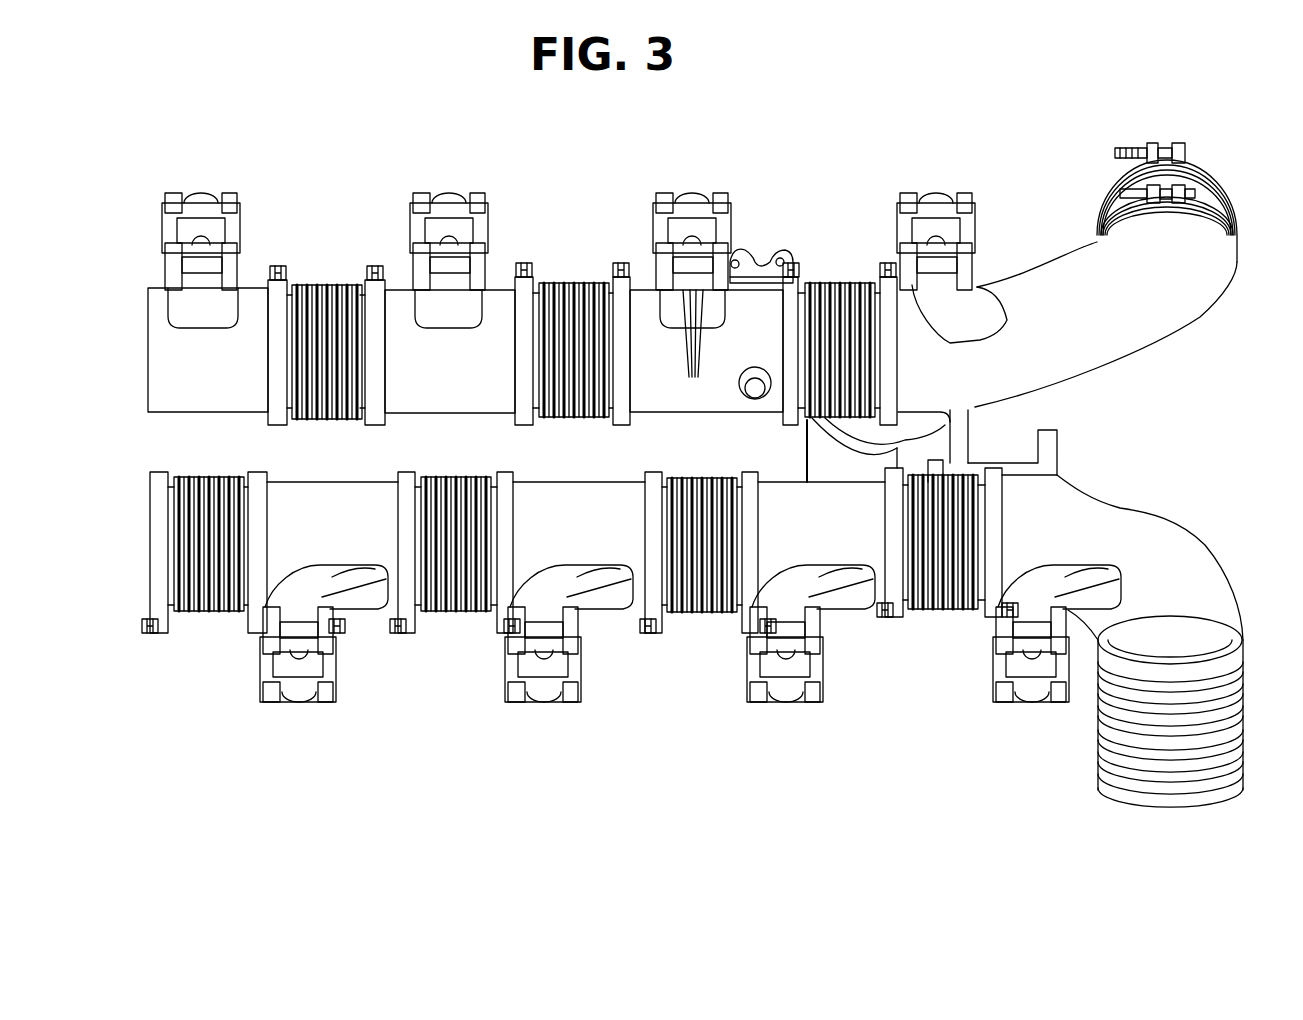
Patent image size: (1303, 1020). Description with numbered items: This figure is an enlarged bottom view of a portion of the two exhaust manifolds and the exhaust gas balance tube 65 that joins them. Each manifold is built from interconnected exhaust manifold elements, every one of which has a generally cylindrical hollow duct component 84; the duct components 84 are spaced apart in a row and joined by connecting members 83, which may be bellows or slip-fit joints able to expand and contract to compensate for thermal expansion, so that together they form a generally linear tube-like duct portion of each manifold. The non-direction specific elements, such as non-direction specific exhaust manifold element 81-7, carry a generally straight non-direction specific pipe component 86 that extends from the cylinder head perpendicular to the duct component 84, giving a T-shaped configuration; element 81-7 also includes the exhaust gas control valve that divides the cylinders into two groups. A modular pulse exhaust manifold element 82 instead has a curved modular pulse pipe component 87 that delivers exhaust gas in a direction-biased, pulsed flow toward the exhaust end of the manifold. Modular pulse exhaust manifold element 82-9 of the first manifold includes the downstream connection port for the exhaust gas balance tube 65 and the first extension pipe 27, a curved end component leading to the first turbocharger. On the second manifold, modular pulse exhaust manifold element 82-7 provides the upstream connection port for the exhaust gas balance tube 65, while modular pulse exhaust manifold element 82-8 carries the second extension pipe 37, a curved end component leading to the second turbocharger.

The first extension pipe 27 is at (1133, 330).
The second extension pipe 37 is at (1160, 557).
The exhaust gas balance tube 65 is at (823, 453).
The non-direction specific exhaust manifold element 81-7 is at (757, 232).
The modular pulse exhaust manifold element 82 is at (348, 726).
The modular pulse exhaust manifold element 82-7 is at (786, 712).
The modular pulse exhaust manifold element 82-8 is at (986, 707).
The modular pulse exhaust manifold element 82-9 is at (943, 170).
The connecting member 83 is at (840, 313).
The duct component 84 is at (232, 380).
The non-direction specific pipe component 86 is at (420, 300).
The modular pulse pipe component 87 is at (955, 308).